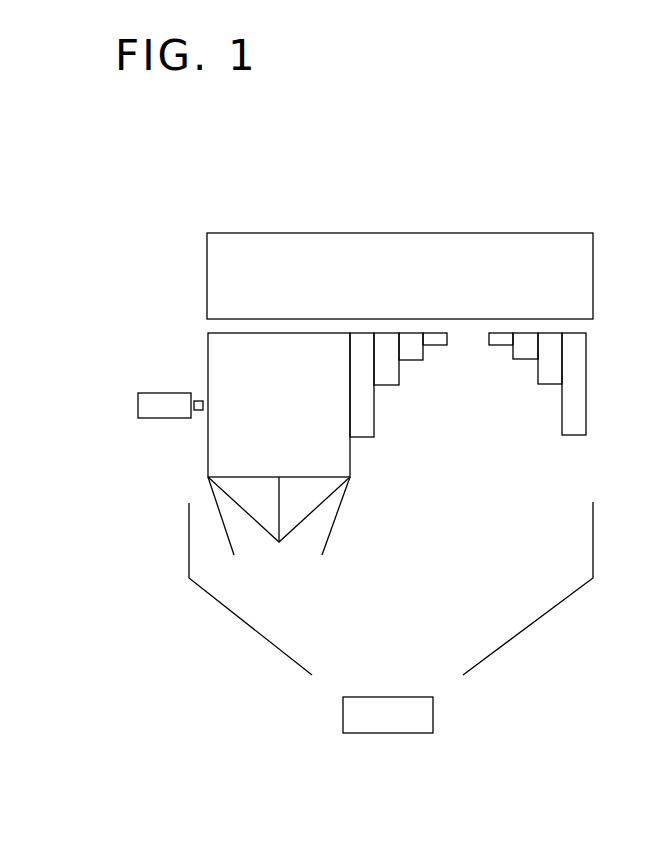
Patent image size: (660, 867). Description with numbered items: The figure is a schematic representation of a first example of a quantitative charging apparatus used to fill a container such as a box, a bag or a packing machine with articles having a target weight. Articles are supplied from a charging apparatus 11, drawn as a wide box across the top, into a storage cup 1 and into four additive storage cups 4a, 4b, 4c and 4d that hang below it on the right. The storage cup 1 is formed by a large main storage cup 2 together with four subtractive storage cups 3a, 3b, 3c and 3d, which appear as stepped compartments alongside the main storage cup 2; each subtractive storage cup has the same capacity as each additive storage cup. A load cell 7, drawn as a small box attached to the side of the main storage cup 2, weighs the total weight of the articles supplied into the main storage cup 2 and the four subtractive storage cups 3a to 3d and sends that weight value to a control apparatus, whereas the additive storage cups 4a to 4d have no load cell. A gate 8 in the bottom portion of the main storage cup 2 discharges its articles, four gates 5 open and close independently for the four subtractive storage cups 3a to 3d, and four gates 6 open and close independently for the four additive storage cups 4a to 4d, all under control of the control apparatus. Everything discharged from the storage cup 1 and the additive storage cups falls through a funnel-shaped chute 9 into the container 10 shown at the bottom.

The storage cup 1 is at (172, 367).
The main storage cup 2 is at (208, 345).
The subtractive storage cup 3a is at (445, 340).
The subtractive storage cup 3b is at (417, 340).
The subtractive storage cup 3c is at (389, 340).
The subtractive storage cup 3d is at (364, 340).
The additive storage cup 4a is at (493, 340).
The additive storage cup 4b is at (520, 340).
The additive storage cup 4c is at (545, 340).
The additive storage cup 4d is at (573, 340).
The gate 5 is at (358, 457).
The gate 6 is at (508, 365).
The load cell 7 is at (168, 418).
The gate 8 is at (233, 548).
The chute 9 is at (286, 658).
The container 10 is at (387, 733).
The charging apparatus 11 is at (227, 248).